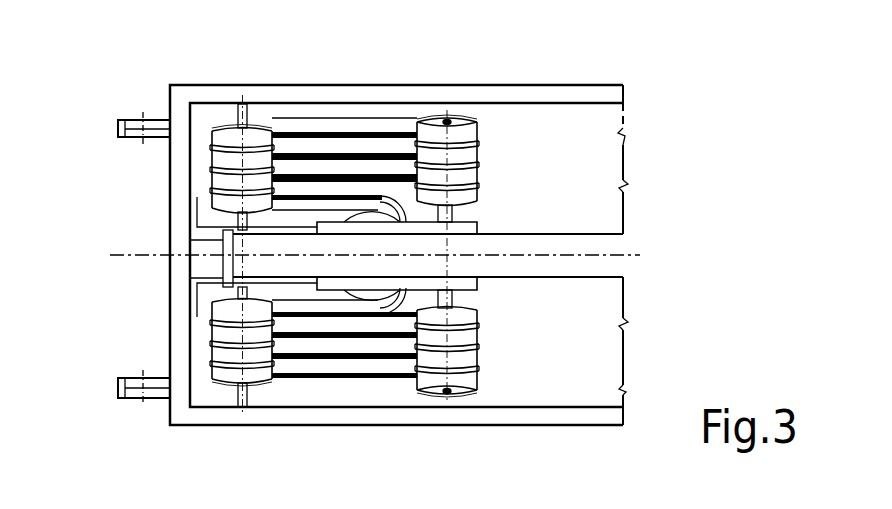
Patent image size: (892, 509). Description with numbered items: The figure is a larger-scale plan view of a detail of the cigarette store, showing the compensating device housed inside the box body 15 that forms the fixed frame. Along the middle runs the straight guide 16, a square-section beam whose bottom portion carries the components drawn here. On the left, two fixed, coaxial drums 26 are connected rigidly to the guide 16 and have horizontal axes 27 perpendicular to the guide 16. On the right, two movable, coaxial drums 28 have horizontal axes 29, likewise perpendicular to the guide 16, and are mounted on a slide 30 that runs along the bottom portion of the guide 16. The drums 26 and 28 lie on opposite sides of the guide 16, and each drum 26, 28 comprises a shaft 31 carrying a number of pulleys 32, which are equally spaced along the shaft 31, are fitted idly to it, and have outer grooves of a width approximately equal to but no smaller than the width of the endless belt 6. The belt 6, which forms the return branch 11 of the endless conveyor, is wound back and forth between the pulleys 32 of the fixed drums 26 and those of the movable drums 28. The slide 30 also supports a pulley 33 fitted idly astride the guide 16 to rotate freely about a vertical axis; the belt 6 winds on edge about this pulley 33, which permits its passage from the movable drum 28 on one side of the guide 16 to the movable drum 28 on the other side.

The endless belt 6 is at (332, 127).
The return branch 11 is at (385, 78).
The box body 15 is at (333, 421).
The straight guide 16 is at (600, 234).
The fixed drum 26 is at (207, 178).
The axis of fixed drum 27 is at (237, 100).
The movable drum 28 is at (482, 165).
The axis of movable drum 29 is at (447, 113).
The slide 30 is at (477, 285).
The shaft 31 is at (248, 118).
The pulley 32 is at (225, 127).
The pulley 33 is at (367, 293).